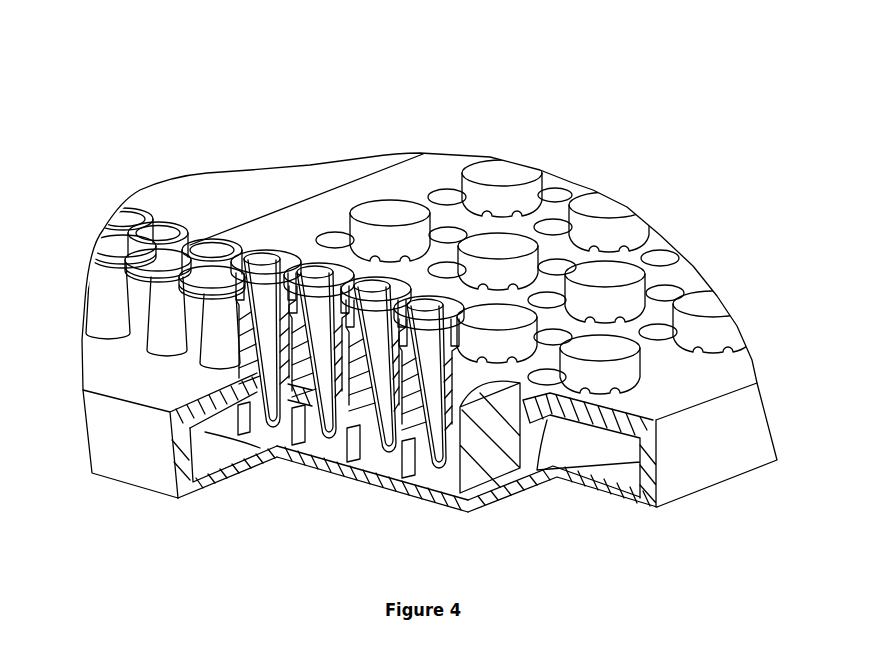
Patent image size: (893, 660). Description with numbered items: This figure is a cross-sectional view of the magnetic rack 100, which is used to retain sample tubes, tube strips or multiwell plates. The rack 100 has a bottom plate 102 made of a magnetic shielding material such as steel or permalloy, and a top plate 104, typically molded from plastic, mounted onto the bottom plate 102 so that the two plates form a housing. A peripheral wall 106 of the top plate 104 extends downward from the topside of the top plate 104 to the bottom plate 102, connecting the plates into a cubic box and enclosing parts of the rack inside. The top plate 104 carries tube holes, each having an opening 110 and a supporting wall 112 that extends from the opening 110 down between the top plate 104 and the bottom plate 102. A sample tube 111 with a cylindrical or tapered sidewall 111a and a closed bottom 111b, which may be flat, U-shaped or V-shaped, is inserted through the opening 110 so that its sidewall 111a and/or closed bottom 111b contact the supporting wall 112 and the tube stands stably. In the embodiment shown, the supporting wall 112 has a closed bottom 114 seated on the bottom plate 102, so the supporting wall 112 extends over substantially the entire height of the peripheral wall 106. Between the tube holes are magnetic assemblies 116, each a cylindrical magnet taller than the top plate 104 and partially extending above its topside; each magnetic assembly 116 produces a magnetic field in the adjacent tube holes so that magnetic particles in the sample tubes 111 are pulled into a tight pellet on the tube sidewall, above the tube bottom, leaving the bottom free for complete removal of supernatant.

The magnetic rack 100 is at (651, 157).
The bottom plate 102 is at (472, 503).
The top plate 104 is at (593, 418).
The peripheral wall 106 is at (665, 494).
The opening 110 is at (383, 422).
The sample tube 111 is at (263, 254).
The sidewall 111a is at (255, 290).
The closed bottom 111b is at (277, 458).
The supporting wall 112 is at (405, 480).
The closed bottom 114 is at (385, 456).
The magnetic assembly 116 is at (714, 303).